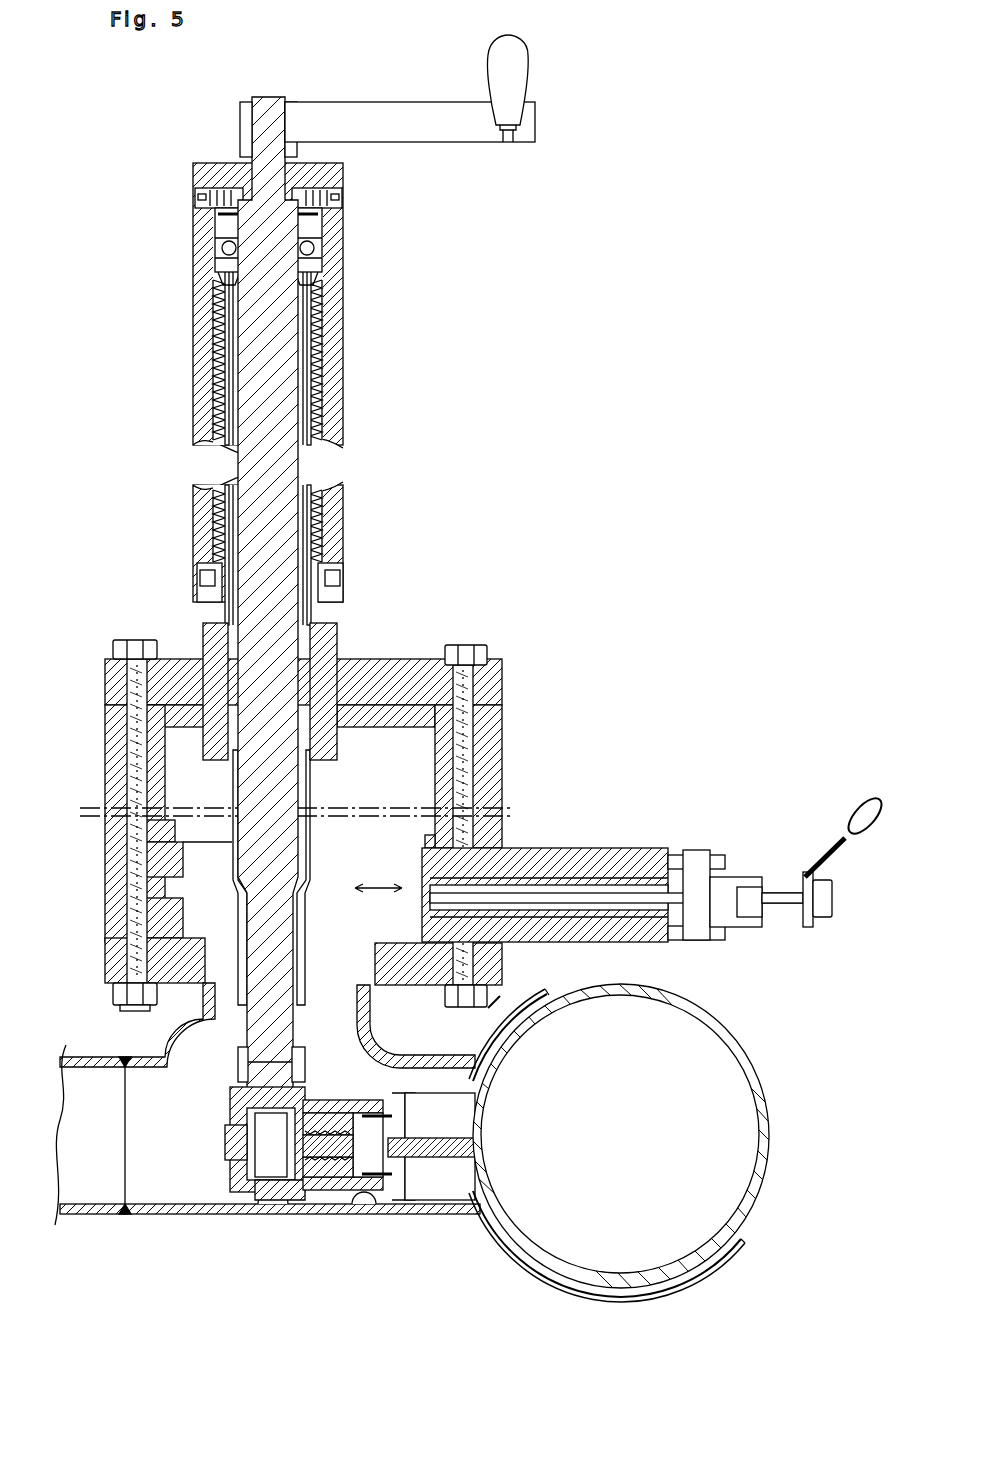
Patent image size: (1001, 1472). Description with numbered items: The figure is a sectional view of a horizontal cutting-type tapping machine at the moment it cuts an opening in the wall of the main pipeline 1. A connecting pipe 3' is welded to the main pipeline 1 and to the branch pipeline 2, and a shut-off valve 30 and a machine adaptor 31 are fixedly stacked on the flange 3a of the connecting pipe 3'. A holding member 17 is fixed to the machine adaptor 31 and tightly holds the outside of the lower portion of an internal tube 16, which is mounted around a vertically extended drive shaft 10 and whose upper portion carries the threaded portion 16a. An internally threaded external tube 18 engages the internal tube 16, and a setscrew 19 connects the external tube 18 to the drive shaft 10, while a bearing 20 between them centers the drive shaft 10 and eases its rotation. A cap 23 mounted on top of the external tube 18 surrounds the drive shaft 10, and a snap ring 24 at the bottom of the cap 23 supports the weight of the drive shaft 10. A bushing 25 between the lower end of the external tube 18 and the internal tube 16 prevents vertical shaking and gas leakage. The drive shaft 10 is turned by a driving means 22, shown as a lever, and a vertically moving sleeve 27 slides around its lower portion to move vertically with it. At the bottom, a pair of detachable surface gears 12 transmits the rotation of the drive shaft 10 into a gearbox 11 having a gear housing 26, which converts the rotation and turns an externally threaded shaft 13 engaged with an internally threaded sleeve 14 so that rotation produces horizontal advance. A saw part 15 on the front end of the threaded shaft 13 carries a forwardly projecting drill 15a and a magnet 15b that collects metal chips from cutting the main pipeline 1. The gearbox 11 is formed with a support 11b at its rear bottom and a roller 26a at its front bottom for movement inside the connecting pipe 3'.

The main pipeline 1 is at (748, 1048).
The branch pipeline 2 is at (75, 1218).
The flange 3a is at (112, 963).
The connecting pipe 3' is at (343, 1196).
The drive shaft 10 is at (280, 352).
The gearbox 11 is at (228, 1186).
The support 11b is at (275, 1205).
The surface gears 12 is at (262, 1068).
The externally threaded shaft 13 is at (415, 1160).
The internally threaded sleeve 14 is at (325, 1190).
The saw part 15 is at (438, 1087).
The drill 15a is at (505, 1210).
The magnet 15b is at (402, 1205).
The internal tube 16 is at (318, 420).
The threaded portion 16a is at (322, 314).
The holding member 17 is at (412, 676).
The external tube 18 is at (330, 524).
The setscrew 19 is at (197, 198).
The bearing 20 is at (320, 268).
The driving means 22 is at (415, 110).
The cap 23 is at (215, 172).
The snap ring 24 is at (318, 228).
The bushing 25 is at (205, 575).
The gear housing 26 is at (340, 1200).
The roller 26a is at (372, 1200).
The vertically moving sleeve 27 is at (330, 780).
The shut-off valve 30 is at (575, 855).
The machine adaptor 31 is at (500, 770).